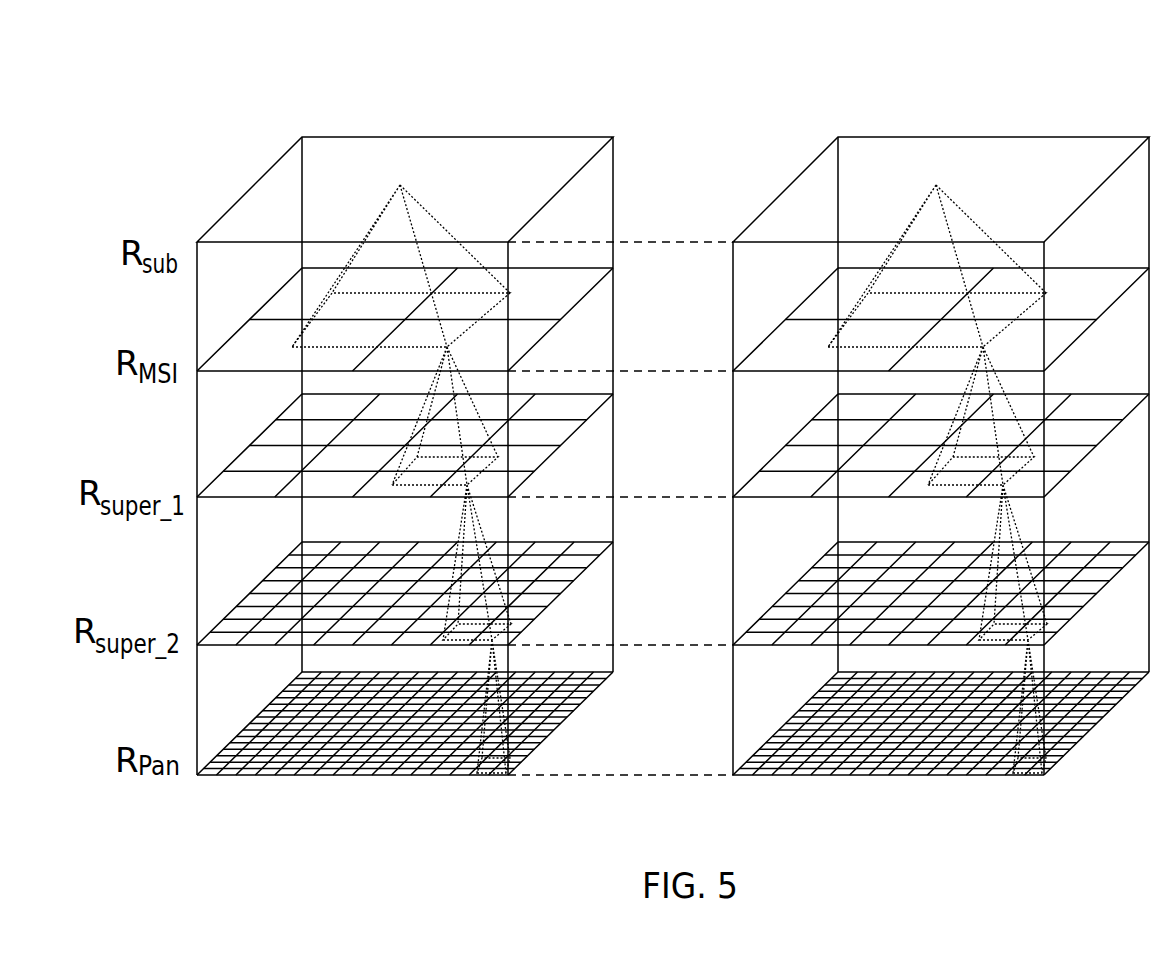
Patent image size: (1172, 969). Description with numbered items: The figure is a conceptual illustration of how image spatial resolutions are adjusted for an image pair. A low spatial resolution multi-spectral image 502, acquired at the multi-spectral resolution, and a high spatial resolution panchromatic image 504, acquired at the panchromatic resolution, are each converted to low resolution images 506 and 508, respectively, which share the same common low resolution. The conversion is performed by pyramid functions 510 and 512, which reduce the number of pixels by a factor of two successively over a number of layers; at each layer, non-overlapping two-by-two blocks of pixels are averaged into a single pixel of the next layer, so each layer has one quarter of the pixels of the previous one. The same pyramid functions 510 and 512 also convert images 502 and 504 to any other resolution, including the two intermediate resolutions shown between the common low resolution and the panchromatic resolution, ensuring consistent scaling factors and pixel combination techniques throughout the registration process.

The low spatial resolution multi-spectral image 502 is at (818, 288).
The high spatial resolution image 504 is at (340, 778).
The low resolution image 506 is at (898, 396).
The low resolution image 508 is at (450, 445).
The pyramid function 510 is at (473, 258).
The pyramid function 512 is at (860, 292).